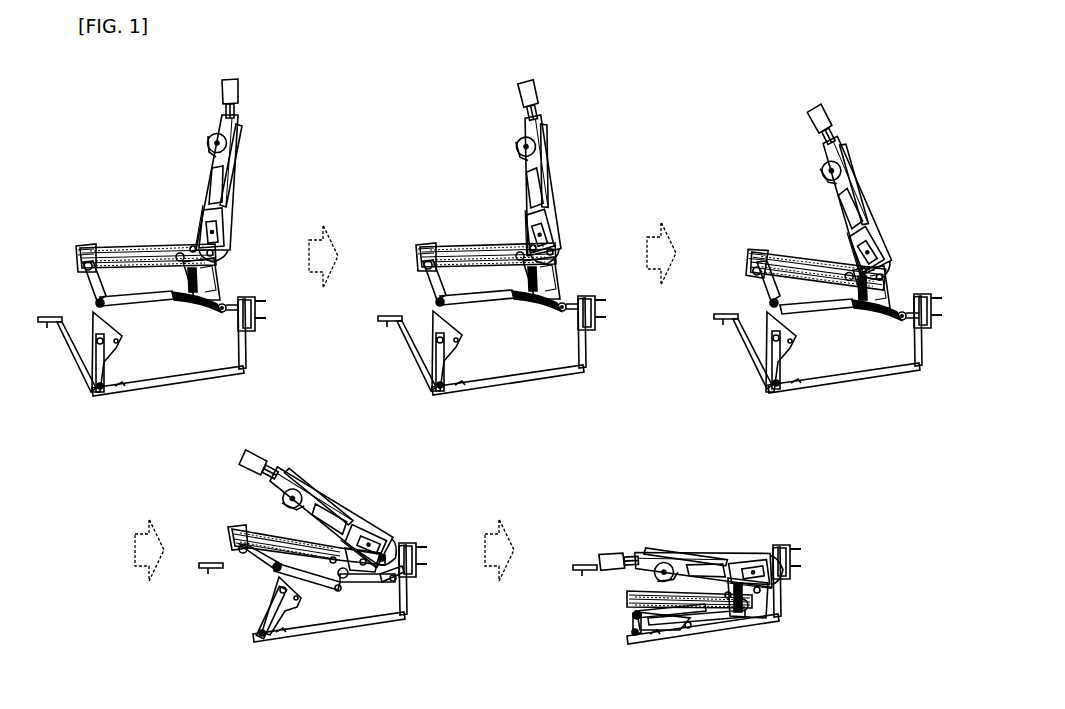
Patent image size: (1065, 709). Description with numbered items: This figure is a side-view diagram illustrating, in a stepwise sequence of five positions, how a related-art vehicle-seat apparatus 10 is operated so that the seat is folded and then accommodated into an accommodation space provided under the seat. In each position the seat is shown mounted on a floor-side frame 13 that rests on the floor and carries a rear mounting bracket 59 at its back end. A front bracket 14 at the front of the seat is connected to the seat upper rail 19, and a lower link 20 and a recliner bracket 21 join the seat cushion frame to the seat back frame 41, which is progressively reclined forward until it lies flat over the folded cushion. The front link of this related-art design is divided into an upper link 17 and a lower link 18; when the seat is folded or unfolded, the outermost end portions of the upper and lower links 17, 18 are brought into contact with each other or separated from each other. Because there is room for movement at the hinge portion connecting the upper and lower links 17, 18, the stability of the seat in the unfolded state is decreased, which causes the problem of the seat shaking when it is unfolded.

The seat frame assembly 10 is at (128, 201).
The floor frame 13 is at (218, 350).
The front bracket 14 is at (81, 281).
The upper link 17 is at (83, 286).
The lower link 18 is at (86, 370).
The seat upper rail 19 is at (129, 248).
The lower link 20 is at (190, 318).
The recliner bracket 21 is at (226, 272).
The seat back frame 41 is at (242, 162).
The rear mounting bracket 59 is at (265, 318).